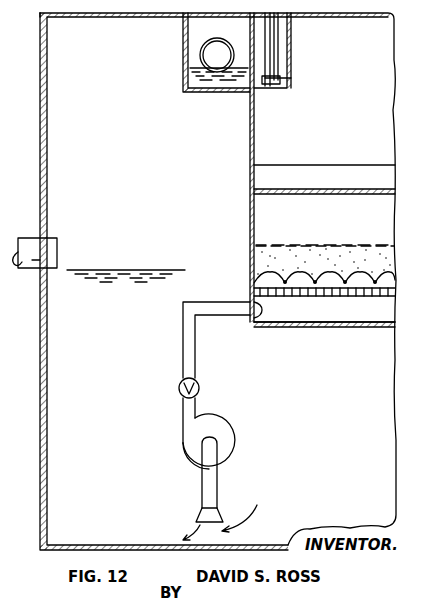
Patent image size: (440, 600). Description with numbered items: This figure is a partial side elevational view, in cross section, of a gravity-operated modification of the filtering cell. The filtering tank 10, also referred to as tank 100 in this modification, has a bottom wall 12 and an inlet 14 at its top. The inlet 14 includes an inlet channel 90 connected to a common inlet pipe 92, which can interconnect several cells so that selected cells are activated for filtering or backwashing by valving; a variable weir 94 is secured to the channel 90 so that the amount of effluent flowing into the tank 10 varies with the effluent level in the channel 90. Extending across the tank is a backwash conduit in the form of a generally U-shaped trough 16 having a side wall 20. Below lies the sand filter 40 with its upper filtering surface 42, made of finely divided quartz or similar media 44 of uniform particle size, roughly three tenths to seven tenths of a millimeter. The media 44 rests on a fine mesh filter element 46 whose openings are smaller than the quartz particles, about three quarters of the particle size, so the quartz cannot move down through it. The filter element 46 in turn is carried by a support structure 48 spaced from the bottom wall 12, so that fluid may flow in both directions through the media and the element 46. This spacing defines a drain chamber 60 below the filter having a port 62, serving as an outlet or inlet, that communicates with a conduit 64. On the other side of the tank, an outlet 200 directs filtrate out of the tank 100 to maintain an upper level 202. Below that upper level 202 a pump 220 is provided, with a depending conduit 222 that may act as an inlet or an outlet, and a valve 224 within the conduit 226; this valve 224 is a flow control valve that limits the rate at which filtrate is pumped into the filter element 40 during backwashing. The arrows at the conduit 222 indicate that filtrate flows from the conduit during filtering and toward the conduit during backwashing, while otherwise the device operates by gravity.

The filtering tank 10 is at (394, 52).
The bottom wall 12 is at (352, 327).
The inlet 14 is at (291, 34).
The trough 16 is at (322, 165).
The side wall 20 is at (395, 183).
The sand filter 40 is at (361, 252).
The upper filtering surface 42 is at (318, 246).
The media 44 is at (250, 253).
The filter element 46 is at (390, 284).
The support structure 48 is at (376, 297).
The drain chamber 60 is at (300, 310).
The port 62 is at (258, 324).
The conduit 64 is at (230, 302).
The inlet channel 90 is at (182, 40).
The inlet pipe 92 is at (210, 40).
The variable weir 94 is at (280, 80).
The tank 100 is at (130, 4).
The outlet 200 is at (32, 241).
The upper level 202 is at (110, 270).
The pump 220 is at (234, 432).
The depending conduit 222 is at (218, 486).
The valve 224 is at (196, 384).
The conduit 226 is at (183, 375).